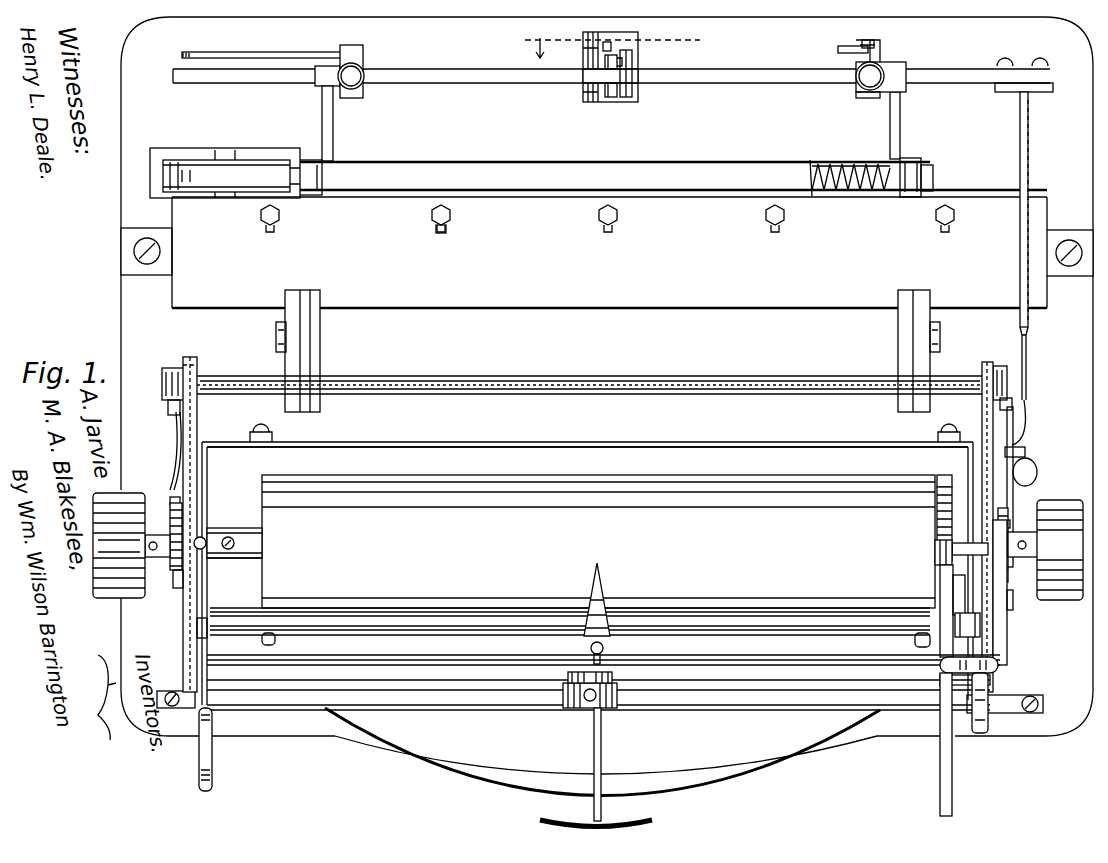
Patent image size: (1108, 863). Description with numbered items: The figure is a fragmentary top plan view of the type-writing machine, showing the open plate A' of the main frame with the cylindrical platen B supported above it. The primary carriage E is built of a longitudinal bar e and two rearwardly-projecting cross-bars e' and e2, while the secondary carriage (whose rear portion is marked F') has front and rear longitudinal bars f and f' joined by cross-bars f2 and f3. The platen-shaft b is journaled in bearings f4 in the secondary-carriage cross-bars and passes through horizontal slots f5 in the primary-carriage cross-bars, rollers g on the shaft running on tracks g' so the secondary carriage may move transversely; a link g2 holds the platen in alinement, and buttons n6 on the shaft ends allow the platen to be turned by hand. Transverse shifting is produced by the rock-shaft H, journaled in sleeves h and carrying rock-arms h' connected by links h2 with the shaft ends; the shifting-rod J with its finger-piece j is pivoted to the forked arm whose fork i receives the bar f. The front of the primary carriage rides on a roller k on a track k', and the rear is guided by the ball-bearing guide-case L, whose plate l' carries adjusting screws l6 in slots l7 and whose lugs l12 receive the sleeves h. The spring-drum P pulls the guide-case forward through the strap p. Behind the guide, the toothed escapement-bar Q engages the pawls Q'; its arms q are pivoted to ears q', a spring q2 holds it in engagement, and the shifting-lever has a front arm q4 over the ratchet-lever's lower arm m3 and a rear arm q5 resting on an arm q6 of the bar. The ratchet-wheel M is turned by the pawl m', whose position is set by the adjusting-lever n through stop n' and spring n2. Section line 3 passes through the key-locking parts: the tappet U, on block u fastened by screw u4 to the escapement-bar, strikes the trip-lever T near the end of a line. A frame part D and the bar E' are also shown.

The open plate A' is at (581, 406).
The primary carriage E is at (167, 684).
The frame bar lower right E' is at (1022, 498).
The toothed escapement-bar Q is at (613, 71).
The forwardly-projecting arm q is at (611, 123).
The ear q' is at (631, 192).
The spring q2 is at (838, 193).
The spring-drum P is at (180, 133).
The strap p is at (505, 168).
The plate l' is at (609, 252).
The screw l6 is at (452, 215).
The slot l7 is at (438, 233).
The trip-lever T is at (583, 48).
The escapement-pawl Q' is at (617, 91).
The section line 3 3 is at (607, 47).
The screw u4 is at (855, 76).
The supporting-block u is at (862, 92).
The tappet U is at (851, 39).
The arm q6 is at (1040, 246).
The guide-case L is at (1040, 200).
The ear or lug l12 is at (898, 358).
The rock-shaft H is at (448, 367).
The bearing-sleeve h is at (584, 371).
The rock-arm h' is at (596, 400).
The link h2 is at (170, 432).
The rear arm q5 is at (1030, 460).
The horizontal slot f5 is at (170, 520).
The carriage frame F' is at (587, 562).
The longitudinal bar f' is at (587, 429).
The cylindrical platen B is at (598, 541).
The bearing f4 is at (212, 548).
The platen-shaft b is at (205, 540).
The roller g is at (602, 535).
The thumb-piece or button n6 is at (588, 546).
The ledge or track g' is at (596, 595).
The ratchet-wheel M is at (940, 487).
The cross-bar f2 is at (968, 462).
The shaft D is at (935, 549).
The pawl m' is at (926, 611).
The finger or stop n' is at (951, 592).
The spring n2 is at (905, 618).
The adjusting-lever n is at (986, 629).
The cross-bar f3 is at (207, 606).
The cross-bar e2 is at (197, 632).
The longitudinal bar e is at (603, 695).
The longitudinal bar f is at (598, 700).
The cross-bar e' is at (984, 683).
The front arm q4 is at (1000, 660).
The lower arm m3 is at (940, 803).
The link g2 is at (985, 725).
The fork i is at (608, 645).
The roller k is at (598, 710).
The track k' is at (562, 705).
The shifting-rod J is at (594, 755).
The button or finger-piece j is at (660, 810).